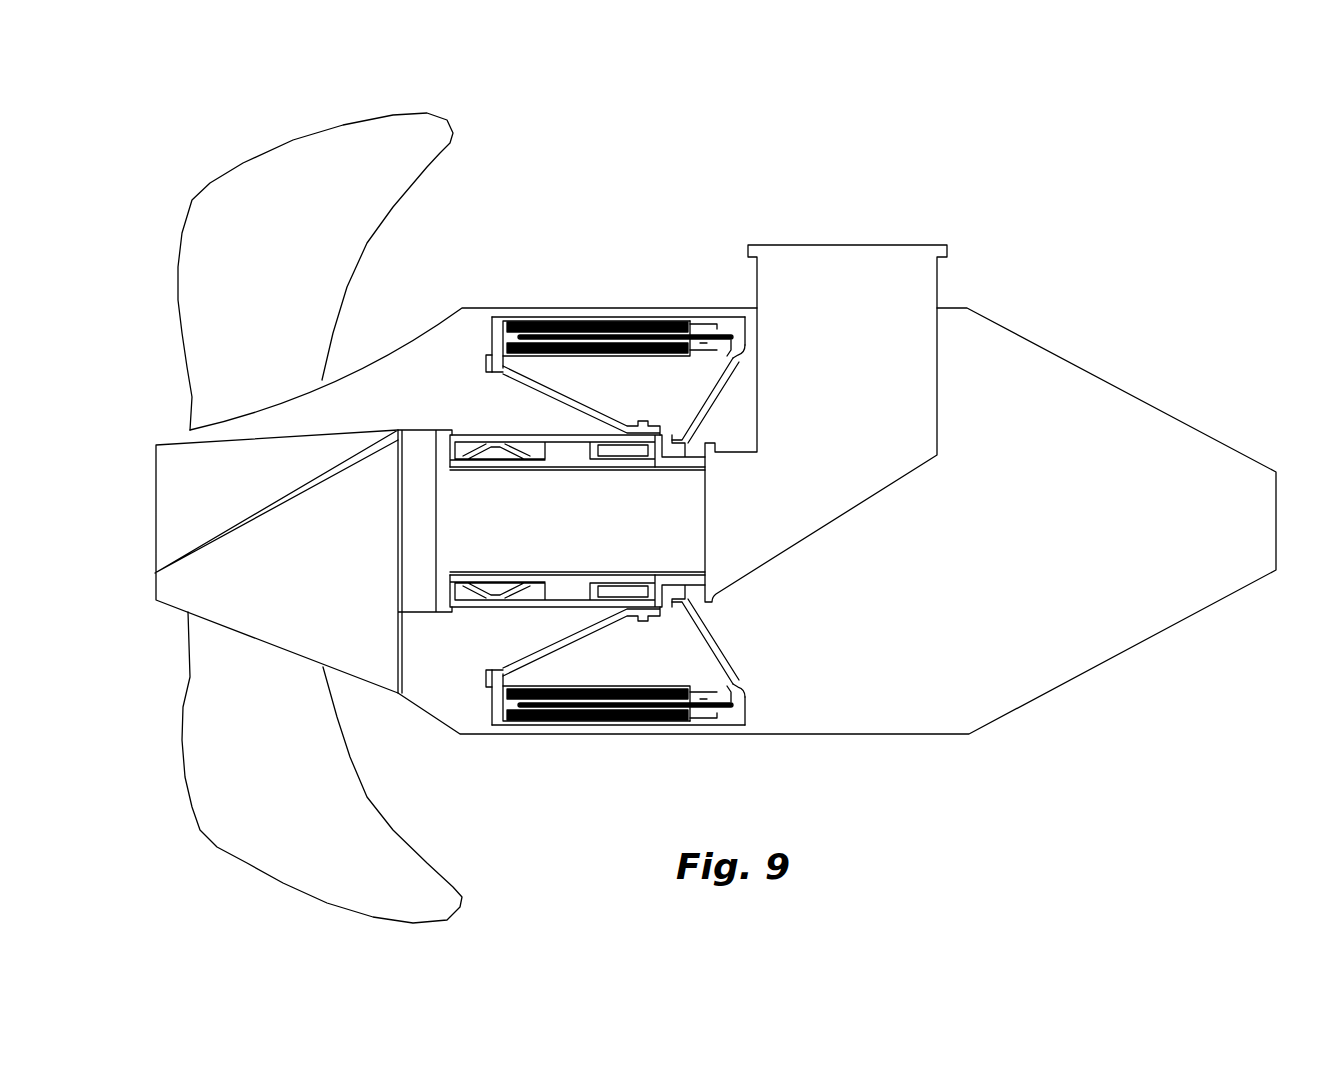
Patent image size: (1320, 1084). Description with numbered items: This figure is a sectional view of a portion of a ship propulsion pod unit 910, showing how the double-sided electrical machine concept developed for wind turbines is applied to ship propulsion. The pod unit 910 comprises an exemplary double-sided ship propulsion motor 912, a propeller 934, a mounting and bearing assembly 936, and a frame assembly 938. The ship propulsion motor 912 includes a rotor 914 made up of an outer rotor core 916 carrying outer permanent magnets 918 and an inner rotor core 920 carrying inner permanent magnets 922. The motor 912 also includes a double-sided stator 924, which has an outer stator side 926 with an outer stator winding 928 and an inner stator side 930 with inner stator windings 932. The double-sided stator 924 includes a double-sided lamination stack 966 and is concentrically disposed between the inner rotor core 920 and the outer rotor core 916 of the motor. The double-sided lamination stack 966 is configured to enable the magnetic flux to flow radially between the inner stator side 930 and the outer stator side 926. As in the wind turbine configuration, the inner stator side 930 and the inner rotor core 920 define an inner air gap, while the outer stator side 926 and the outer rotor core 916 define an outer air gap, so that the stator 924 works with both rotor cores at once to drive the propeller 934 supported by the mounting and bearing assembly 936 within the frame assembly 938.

The ship propulsion pod unit 910 is at (950, 168).
The double-sided ship propulsion motor 912 is at (617, 214).
The rotor 914 is at (492, 342).
The outer rotor core 916 is at (510, 318).
The outer permanent magnets 918 is at (585, 318).
The inner rotor core 920 is at (538, 356).
The inner permanent magnets 922 is at (697, 406).
The double-sided stator 924 is at (484, 318).
The outer stator side 926 is at (522, 320).
The outer stator winding 928 is at (704, 335).
The inner stator side 930 is at (488, 350).
The inner stator windings 932 is at (743, 344).
The propeller 934 is at (418, 152).
The mounting and bearing assembly 936 is at (447, 440).
The frame assembly 938 is at (1100, 648).
The double-sided lamination stack 966 is at (648, 318).